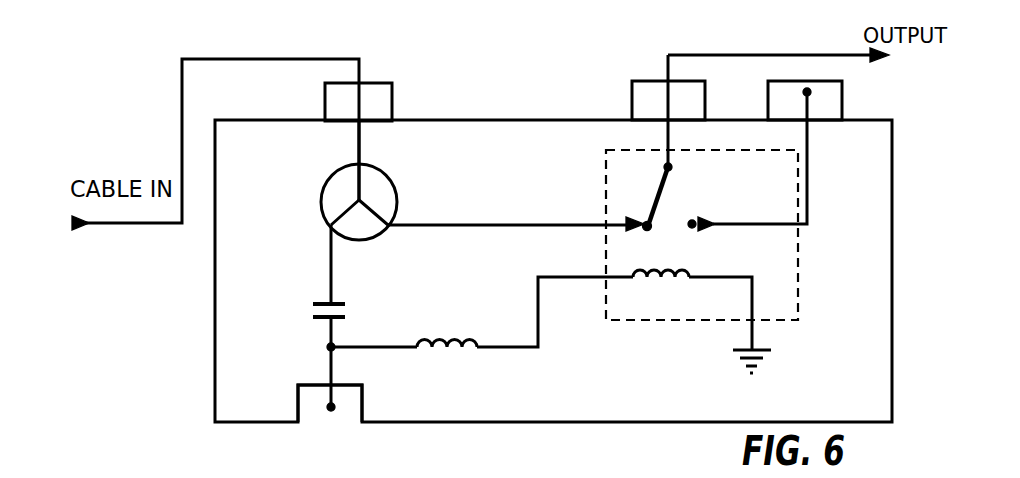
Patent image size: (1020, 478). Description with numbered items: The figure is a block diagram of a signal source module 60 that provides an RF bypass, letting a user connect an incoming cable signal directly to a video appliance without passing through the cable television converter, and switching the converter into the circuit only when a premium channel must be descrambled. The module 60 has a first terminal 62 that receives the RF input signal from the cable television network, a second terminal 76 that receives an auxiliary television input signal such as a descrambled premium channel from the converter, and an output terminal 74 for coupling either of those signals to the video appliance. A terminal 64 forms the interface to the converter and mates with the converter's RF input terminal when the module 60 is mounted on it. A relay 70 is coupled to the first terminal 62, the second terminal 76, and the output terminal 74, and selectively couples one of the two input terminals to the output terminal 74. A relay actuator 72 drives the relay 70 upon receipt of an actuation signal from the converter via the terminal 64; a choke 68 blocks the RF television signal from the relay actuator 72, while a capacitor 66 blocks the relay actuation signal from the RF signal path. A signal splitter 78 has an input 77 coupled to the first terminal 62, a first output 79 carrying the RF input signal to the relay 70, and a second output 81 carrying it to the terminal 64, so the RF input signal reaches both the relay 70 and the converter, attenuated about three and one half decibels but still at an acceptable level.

The module 60 is at (893, 217).
The first terminal 62 is at (394, 100).
The terminal 64 is at (300, 412).
The capacitor 66 is at (344, 304).
The choke 68 is at (463, 343).
The relay 70 is at (782, 288).
The relay actuator 72 is at (690, 273).
The output terminal 74 is at (632, 80).
The second terminal 76 is at (767, 97).
The input 77 is at (358, 144).
The signal splitter 78 is at (397, 193).
The first output 79 is at (490, 224).
The second output 81 is at (330, 262).